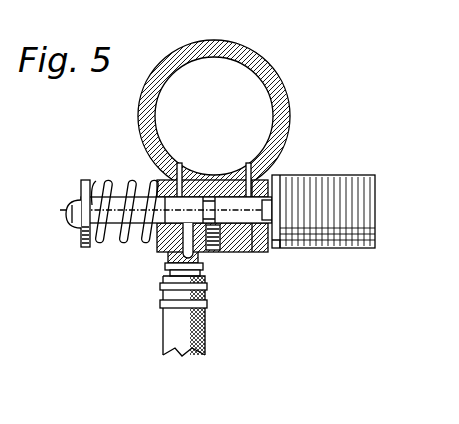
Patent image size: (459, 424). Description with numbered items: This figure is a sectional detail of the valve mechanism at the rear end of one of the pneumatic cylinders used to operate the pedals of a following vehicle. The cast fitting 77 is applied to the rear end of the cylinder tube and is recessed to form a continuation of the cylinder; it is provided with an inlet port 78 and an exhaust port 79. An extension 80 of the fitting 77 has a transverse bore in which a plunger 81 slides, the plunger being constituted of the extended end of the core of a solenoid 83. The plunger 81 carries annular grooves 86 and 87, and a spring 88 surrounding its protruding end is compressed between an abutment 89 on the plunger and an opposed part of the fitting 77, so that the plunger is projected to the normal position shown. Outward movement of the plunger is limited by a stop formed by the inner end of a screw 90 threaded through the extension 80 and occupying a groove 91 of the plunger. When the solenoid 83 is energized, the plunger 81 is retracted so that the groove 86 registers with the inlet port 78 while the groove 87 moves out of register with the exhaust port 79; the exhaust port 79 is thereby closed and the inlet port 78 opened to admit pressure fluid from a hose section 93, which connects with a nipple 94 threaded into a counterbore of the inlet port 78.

The fitting 77 is at (290, 123).
The inlet port 78 is at (181, 188).
The exhaust port 79 is at (249, 188).
The extension 80 is at (232, 253).
The plunger 81 is at (238, 253).
The solenoid 83 is at (347, 180).
The annular groove 86 is at (152, 238).
The annular groove 87 is at (284, 248).
The spring 88 is at (110, 186).
The abutment 89 is at (86, 188).
The screw 90 is at (219, 252).
The groove 91 is at (216, 198).
The hose section 93 is at (168, 328).
The nipple 94 is at (168, 265).